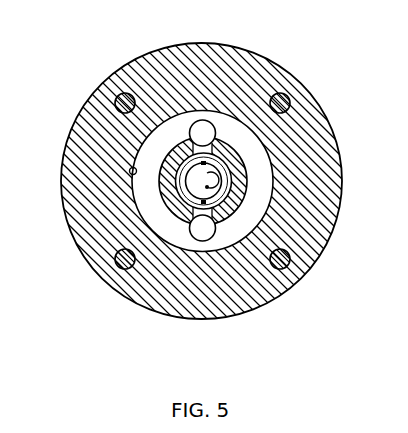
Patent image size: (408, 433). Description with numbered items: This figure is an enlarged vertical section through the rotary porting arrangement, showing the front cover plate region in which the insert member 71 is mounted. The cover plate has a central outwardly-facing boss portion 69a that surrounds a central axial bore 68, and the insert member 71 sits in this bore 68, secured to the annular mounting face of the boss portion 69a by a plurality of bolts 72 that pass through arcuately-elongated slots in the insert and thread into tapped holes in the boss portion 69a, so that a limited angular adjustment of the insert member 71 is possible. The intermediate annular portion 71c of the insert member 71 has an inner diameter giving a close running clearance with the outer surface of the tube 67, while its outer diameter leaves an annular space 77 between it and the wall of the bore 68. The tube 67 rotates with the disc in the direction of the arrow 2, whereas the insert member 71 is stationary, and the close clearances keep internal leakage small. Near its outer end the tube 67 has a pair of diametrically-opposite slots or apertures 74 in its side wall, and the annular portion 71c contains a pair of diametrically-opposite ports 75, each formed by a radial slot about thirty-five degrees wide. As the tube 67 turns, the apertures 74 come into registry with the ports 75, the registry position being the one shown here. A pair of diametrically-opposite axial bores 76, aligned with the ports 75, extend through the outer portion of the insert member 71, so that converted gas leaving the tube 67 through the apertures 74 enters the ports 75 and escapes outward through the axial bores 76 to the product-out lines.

The arrow 2 is at (220, 178).
The tube 67 is at (208, 186).
The central axial bore 68 is at (129, 170).
The boss portion 69a is at (302, 248).
The insert member 71 is at (195, 40).
The intermediate annular portion 71c is at (167, 190).
The bolts 72 is at (118, 265).
The slots or apertures 74 is at (234, 158).
The ports 75 is at (190, 148).
The axial bores 76 is at (203, 133).
The annular space 77 is at (183, 125).